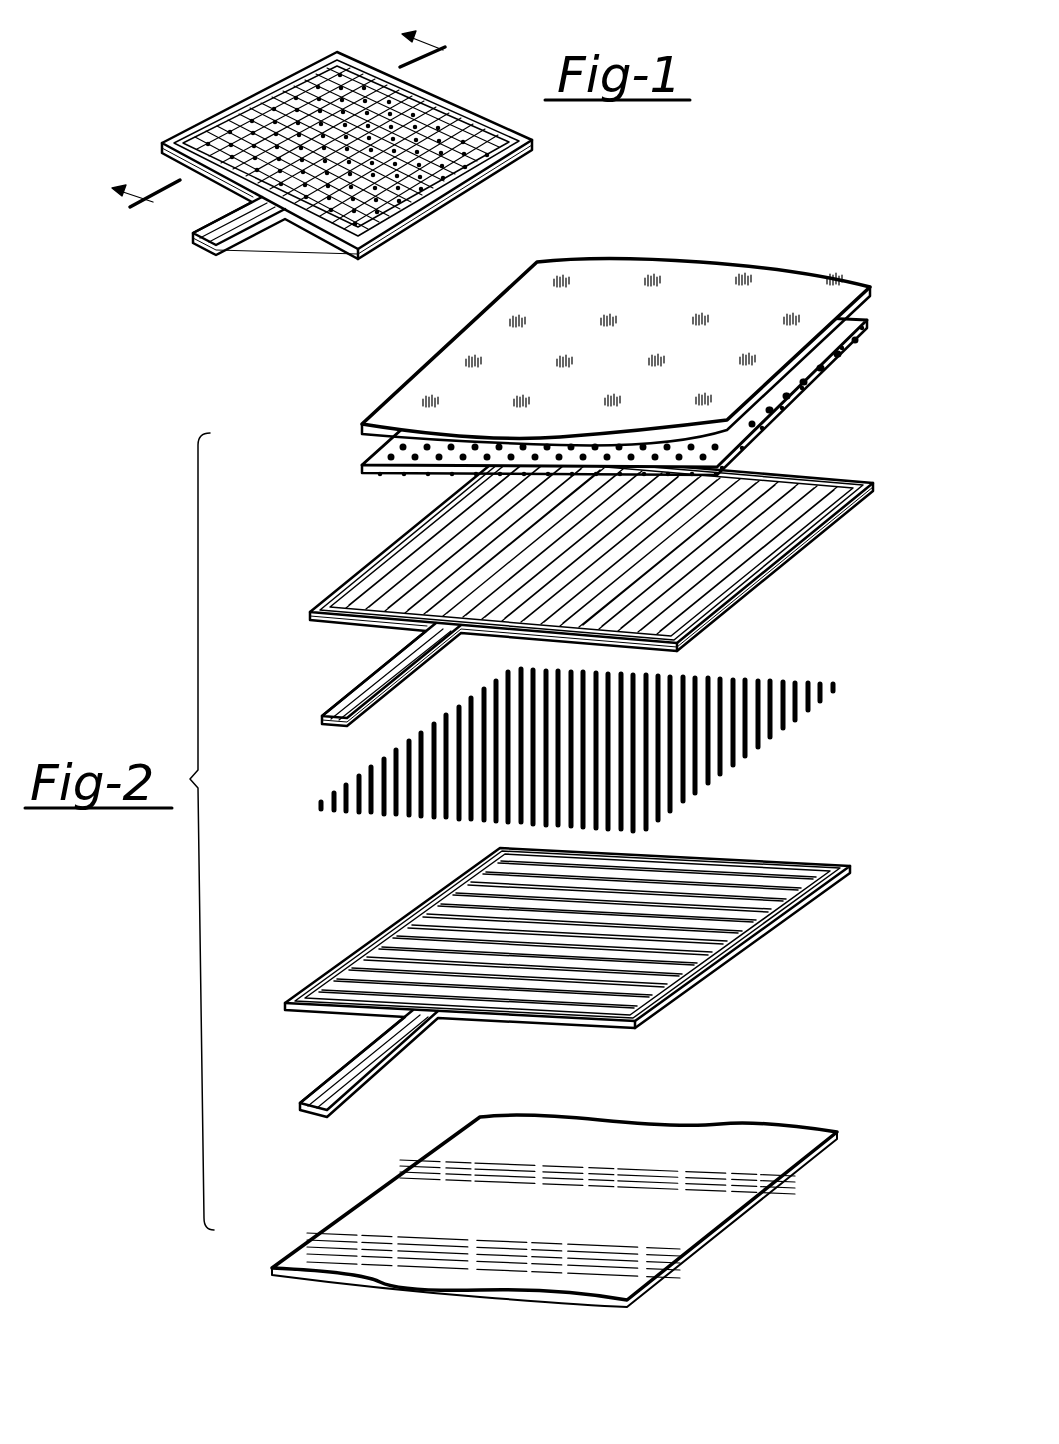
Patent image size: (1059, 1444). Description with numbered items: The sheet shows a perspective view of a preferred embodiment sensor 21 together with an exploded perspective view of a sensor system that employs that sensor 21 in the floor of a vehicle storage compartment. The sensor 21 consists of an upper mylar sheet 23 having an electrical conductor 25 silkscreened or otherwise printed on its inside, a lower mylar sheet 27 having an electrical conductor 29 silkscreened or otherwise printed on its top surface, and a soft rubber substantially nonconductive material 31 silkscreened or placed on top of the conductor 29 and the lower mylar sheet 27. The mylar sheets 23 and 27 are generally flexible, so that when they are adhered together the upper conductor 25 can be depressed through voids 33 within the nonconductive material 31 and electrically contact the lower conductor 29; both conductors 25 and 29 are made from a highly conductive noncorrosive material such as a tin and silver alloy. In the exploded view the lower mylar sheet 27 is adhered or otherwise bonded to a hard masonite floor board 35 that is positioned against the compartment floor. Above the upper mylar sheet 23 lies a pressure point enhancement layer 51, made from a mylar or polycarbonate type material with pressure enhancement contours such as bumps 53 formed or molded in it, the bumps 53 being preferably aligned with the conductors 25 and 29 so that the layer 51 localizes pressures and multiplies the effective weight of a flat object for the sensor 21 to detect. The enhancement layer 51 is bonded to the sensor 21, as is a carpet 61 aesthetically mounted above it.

In FIG. 1, the sensor 21 is at (283, 70).
In FIG. 2, the sensor 21 is at (357, 557).
In FIG. 2, the upper mylar sheet 23 is at (320, 603).
In FIG. 2, the electrical conductor 25 is at (343, 622).
In FIG. 2, the lower mylar sheet 27 is at (290, 997).
In FIG. 2, the electrical conductor 29 is at (333, 960).
In FIG. 2, the nonconductive material 31 is at (306, 793).
In FIG. 2, the voids 33 is at (363, 783).
In FIG. 2, the masonite floor board 35 is at (360, 1230).
In FIG. 2, the pressure point enhancement layer 51 is at (862, 320).
In FIG. 2, the bumps 53 is at (763, 478).
In FIG. 2, the carpet 61 is at (670, 303).